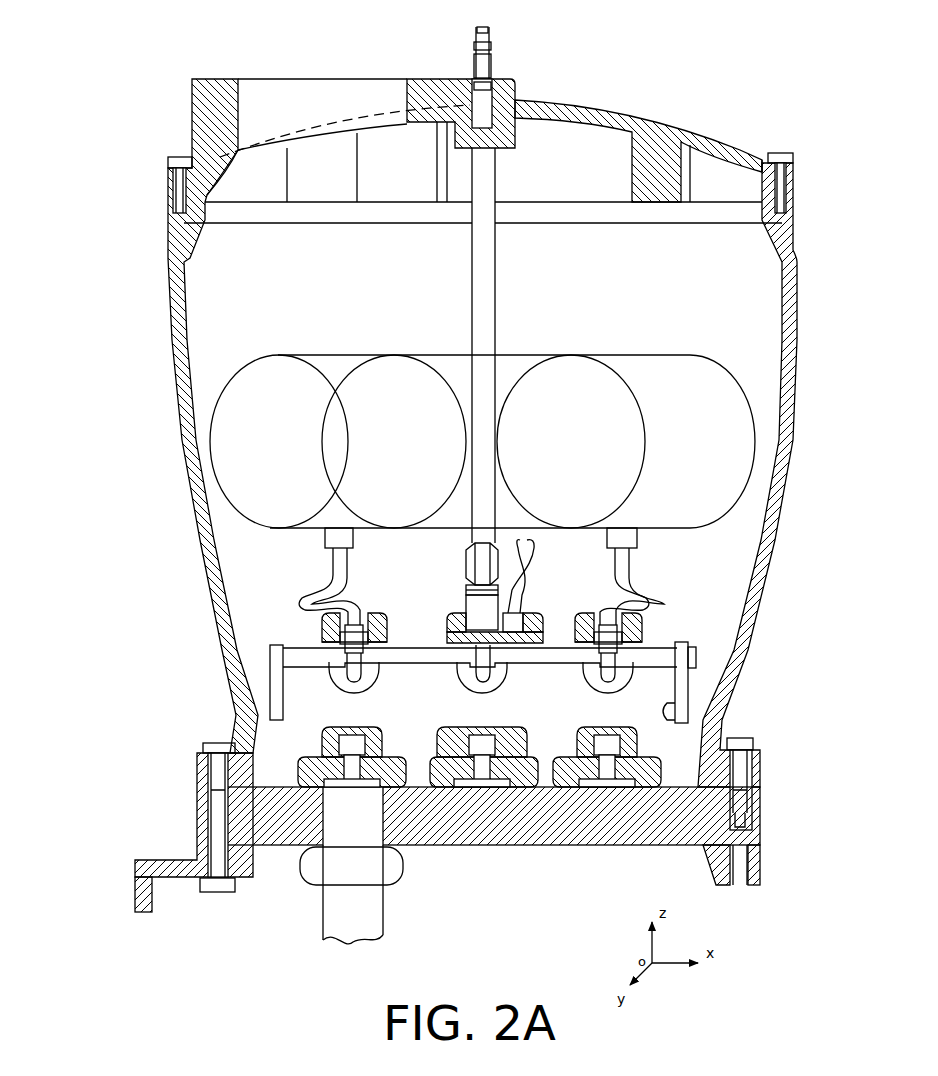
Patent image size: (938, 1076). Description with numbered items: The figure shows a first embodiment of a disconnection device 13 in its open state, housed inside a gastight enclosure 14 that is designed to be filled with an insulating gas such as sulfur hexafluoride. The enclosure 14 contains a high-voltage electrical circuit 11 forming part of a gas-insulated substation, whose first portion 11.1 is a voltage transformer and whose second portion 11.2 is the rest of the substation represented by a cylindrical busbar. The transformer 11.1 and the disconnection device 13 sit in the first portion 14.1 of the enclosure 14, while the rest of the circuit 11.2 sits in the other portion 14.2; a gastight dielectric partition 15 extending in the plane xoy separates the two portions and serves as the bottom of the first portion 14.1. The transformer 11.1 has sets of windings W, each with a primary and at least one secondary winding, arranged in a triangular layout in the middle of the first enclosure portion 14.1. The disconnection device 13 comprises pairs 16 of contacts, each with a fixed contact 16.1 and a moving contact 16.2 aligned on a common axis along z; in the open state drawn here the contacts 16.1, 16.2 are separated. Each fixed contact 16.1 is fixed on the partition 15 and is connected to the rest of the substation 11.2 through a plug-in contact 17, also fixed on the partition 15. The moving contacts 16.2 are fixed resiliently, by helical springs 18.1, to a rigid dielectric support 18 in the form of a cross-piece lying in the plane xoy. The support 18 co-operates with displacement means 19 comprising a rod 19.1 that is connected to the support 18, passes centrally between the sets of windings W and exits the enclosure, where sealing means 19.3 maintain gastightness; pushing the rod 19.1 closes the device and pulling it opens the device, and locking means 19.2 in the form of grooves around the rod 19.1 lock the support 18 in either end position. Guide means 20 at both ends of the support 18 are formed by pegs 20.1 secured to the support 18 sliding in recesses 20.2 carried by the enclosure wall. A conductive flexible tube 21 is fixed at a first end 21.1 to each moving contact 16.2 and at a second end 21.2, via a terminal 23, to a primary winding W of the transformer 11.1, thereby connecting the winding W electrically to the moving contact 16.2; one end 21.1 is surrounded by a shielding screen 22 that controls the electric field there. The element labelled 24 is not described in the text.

The high-voltage electrical circuit 11 is at (77, 525).
The first portion of the electrical circuit 11.1 is at (182, 556).
The second portion of the electrical circuit 11.2 is at (330, 915).
The disconnection device 13 is at (422, 603).
The gastight enclosure 14 is at (752, 633).
The first portion of the gastight enclosure 14.1 is at (783, 522).
The other portion of the gastight enclosure 14.2 is at (762, 862).
The gastight dielectric partition 15 is at (519, 835).
The pair of contacts 16 is at (383, 715).
The fixed contact 16.1 is at (318, 788).
The moving contact 16.2 is at (300, 762).
The plug-in contact 17 is at (403, 866).
The dielectric support 18 is at (660, 660).
The helical spring 18.1 is at (362, 688).
The displacement means 19 is at (482, 285).
The rod 19.1 is at (488, 248).
The locking means 19.2 is at (472, 40).
The sealing means 19.3 is at (493, 55).
The guide means 20 is at (768, 690).
The pegs 20.1 is at (690, 655).
The recesses 20.2 is at (688, 703).
The flexible tube 21 is at (330, 582).
The first end of the flexible tube 21.1 is at (352, 624).
The second end of the flexible tube 21.2 is at (386, 548).
The shielding screen 22 is at (333, 628).
The terminal 23 is at (342, 530).
The washer 24 is at (325, 540).
The set of windings W is at (297, 372).